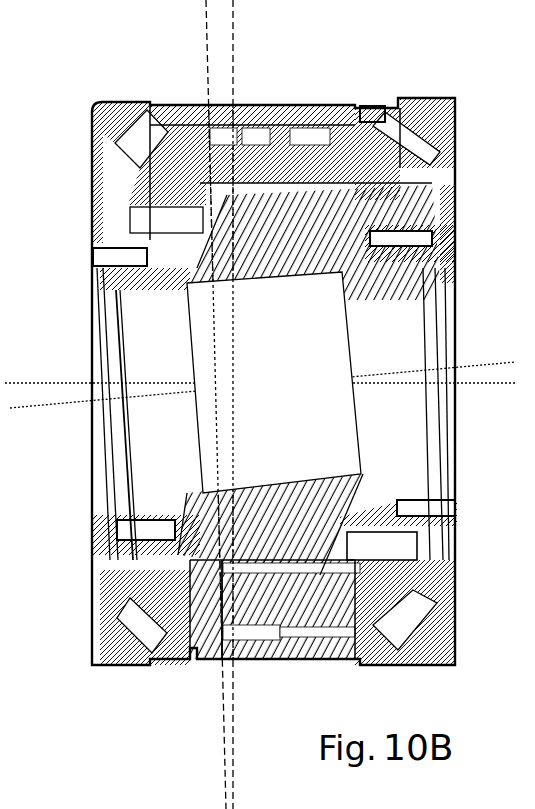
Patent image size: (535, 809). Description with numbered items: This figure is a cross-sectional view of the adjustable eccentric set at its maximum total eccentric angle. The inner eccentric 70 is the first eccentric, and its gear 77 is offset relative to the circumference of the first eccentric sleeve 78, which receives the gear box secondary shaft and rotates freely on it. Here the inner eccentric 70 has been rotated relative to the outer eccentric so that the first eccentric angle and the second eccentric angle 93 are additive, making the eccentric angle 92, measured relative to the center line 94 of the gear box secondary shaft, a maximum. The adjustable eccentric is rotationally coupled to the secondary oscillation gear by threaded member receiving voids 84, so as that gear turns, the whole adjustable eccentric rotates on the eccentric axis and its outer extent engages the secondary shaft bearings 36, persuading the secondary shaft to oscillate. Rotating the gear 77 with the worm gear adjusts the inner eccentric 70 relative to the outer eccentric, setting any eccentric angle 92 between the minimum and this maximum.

The secondary shaft bearings 36 is at (428, 140).
The inner eccentric 70 is at (140, 367).
The gear 77 is at (268, 118).
The first eccentric sleeve 78 is at (93, 360).
The threaded member receiving voids 84 is at (100, 250).
The eccentric angle 92 is at (493, 362).
The second eccentric angle 93 is at (220, 34).
The center line 94 is at (510, 385).